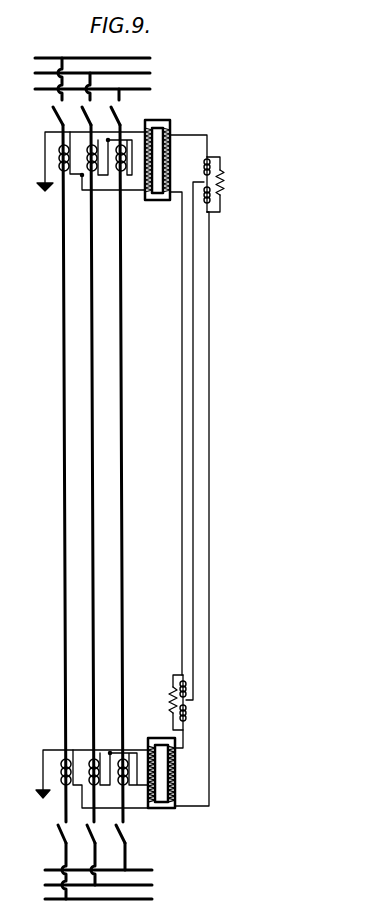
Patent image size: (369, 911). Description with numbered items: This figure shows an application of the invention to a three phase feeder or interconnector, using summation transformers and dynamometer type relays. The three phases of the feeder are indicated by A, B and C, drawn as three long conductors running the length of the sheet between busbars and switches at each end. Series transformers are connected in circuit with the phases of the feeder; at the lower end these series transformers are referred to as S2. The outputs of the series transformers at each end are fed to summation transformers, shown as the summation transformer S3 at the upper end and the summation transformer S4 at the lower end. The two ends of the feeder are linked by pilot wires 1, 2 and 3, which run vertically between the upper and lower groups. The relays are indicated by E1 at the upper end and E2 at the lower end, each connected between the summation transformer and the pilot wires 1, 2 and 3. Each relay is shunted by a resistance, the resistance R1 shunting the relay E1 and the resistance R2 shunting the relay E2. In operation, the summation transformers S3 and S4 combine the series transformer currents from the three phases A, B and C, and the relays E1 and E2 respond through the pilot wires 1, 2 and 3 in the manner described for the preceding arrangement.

The phase of three phase feeder A is at (63, 373).
The phase of three phase feeder B is at (93, 389).
The phase of three phase feeder C is at (122, 390).
The pilot wire 1 is at (182, 447).
The pilot wire 2 is at (193, 455).
The pilot wire 3 is at (209, 498).
The series transformers S2 is at (131, 784).
The summation transformer S3 is at (166, 121).
The summation transformer S4 is at (178, 780).
The relay E1 is at (209, 192).
The resistance R1 is at (224, 184).
The relay E2 is at (187, 713).
The resistance R2 is at (170, 697).